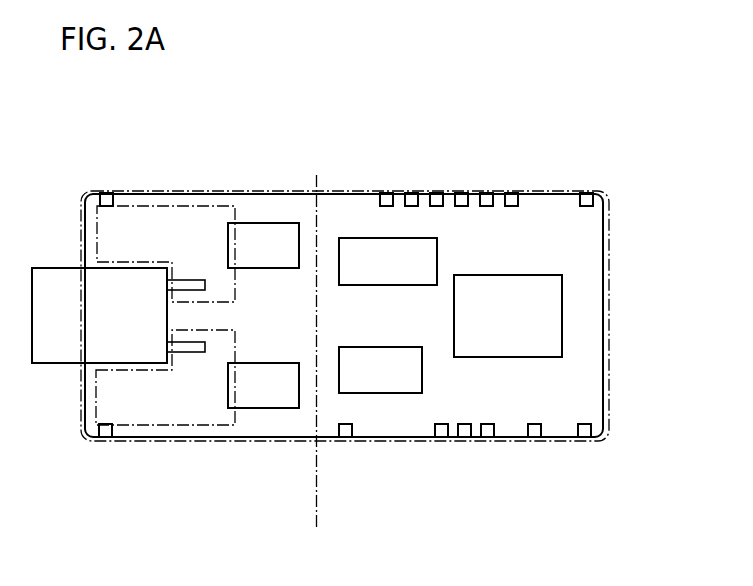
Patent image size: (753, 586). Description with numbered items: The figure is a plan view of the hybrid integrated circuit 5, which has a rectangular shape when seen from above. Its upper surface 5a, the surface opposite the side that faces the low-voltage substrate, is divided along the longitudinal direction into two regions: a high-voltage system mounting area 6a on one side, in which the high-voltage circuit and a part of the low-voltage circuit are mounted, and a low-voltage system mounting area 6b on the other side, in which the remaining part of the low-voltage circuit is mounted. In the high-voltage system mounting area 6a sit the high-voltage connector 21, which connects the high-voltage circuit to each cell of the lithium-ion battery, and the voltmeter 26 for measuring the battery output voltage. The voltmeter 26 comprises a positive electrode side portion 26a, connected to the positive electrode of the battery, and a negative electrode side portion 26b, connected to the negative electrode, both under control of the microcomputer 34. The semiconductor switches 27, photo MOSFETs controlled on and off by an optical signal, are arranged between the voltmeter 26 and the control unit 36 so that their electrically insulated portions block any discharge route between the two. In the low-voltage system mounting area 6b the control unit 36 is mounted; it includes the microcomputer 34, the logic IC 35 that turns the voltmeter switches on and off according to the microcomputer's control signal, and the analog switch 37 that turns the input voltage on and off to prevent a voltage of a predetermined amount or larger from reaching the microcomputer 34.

The hybrid integrated circuit 5 is at (608, 397).
The upper surface 5a is at (298, 420).
The high-voltage system mounting area 6a is at (84, 405).
The low-voltage system mounting area 6b is at (603, 223).
The high-voltage connector 21 is at (45, 283).
The voltmeter 26 is at (288, 213).
The positive electrode side portion 26a is at (167, 397).
The negative electrode side portion 26b is at (165, 227).
The semiconductor switches 27 is at (262, 238).
The microcomputer 34 is at (562, 307).
The logic IC 35 is at (366, 238).
The control unit 36 is at (535, 218).
The analog switch 37 is at (387, 395).